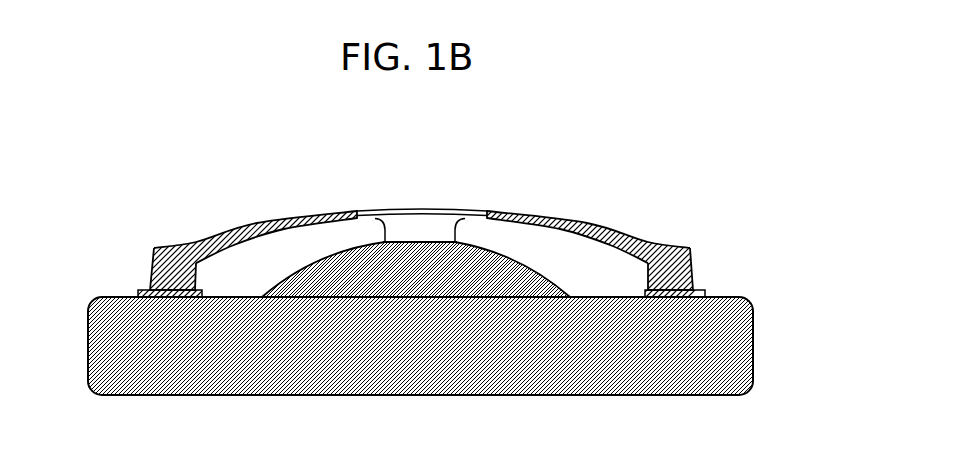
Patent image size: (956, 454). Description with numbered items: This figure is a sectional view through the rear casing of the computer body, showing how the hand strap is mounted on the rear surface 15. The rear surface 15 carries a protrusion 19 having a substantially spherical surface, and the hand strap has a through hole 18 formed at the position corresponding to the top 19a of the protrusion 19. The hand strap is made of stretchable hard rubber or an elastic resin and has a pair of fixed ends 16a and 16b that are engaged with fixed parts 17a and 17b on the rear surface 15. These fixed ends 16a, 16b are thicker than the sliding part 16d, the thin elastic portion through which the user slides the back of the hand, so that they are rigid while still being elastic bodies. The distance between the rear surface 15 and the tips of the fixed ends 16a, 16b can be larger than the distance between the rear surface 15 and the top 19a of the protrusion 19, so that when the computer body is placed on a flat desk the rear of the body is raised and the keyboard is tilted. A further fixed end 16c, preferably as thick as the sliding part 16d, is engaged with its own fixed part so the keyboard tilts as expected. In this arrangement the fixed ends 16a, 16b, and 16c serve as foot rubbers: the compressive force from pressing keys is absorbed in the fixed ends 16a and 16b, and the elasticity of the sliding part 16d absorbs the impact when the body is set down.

The rear surface 15 is at (603, 301).
The fixed end 16a is at (168, 245).
The fixed end 16b is at (692, 253).
The fixed end 16c is at (397, 228).
The sliding part 16d is at (555, 218).
The fixed part 17a is at (148, 288).
The fixed part 17b is at (702, 290).
The through hole 18 is at (445, 208).
The protrusion 19 is at (328, 278).
The top 19a is at (417, 241).